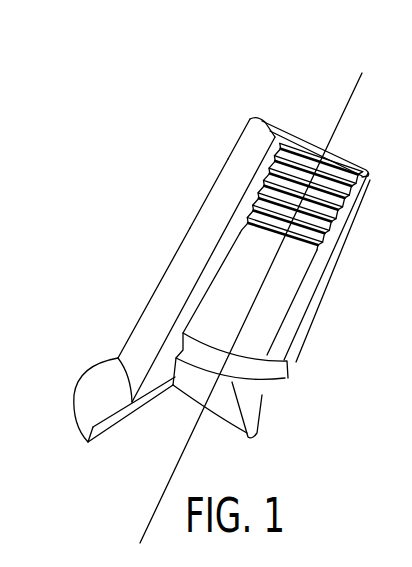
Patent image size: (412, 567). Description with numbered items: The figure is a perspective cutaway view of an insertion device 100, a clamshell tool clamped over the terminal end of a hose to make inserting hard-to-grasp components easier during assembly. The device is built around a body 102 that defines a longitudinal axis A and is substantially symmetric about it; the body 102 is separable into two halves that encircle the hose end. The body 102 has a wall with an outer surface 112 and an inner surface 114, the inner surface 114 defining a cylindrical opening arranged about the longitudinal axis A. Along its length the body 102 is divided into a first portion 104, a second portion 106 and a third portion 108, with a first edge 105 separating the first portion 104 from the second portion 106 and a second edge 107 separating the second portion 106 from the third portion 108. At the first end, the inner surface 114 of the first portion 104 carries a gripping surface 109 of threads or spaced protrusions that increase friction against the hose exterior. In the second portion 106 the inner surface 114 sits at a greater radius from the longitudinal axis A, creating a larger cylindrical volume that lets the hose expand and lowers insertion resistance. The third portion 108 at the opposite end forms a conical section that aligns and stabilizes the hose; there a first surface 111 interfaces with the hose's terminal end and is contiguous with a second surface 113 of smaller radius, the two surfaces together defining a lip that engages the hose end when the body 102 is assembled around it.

The insertion device 100 is at (150, 95).
The longitudinal axis A is at (362, 73).
The body 102 is at (280, 137).
The first portion 104 is at (205, 202).
The first edge 105 is at (200, 258).
The second portion 106 is at (145, 315).
The second edge 107 is at (125, 358).
The third portion 108 is at (100, 388).
The gripping surface 109 is at (333, 203).
The first surface 111 is at (264, 380).
The outer surface 112 is at (224, 146).
The second surface 113 is at (245, 390).
The inner surface 114 is at (293, 278).